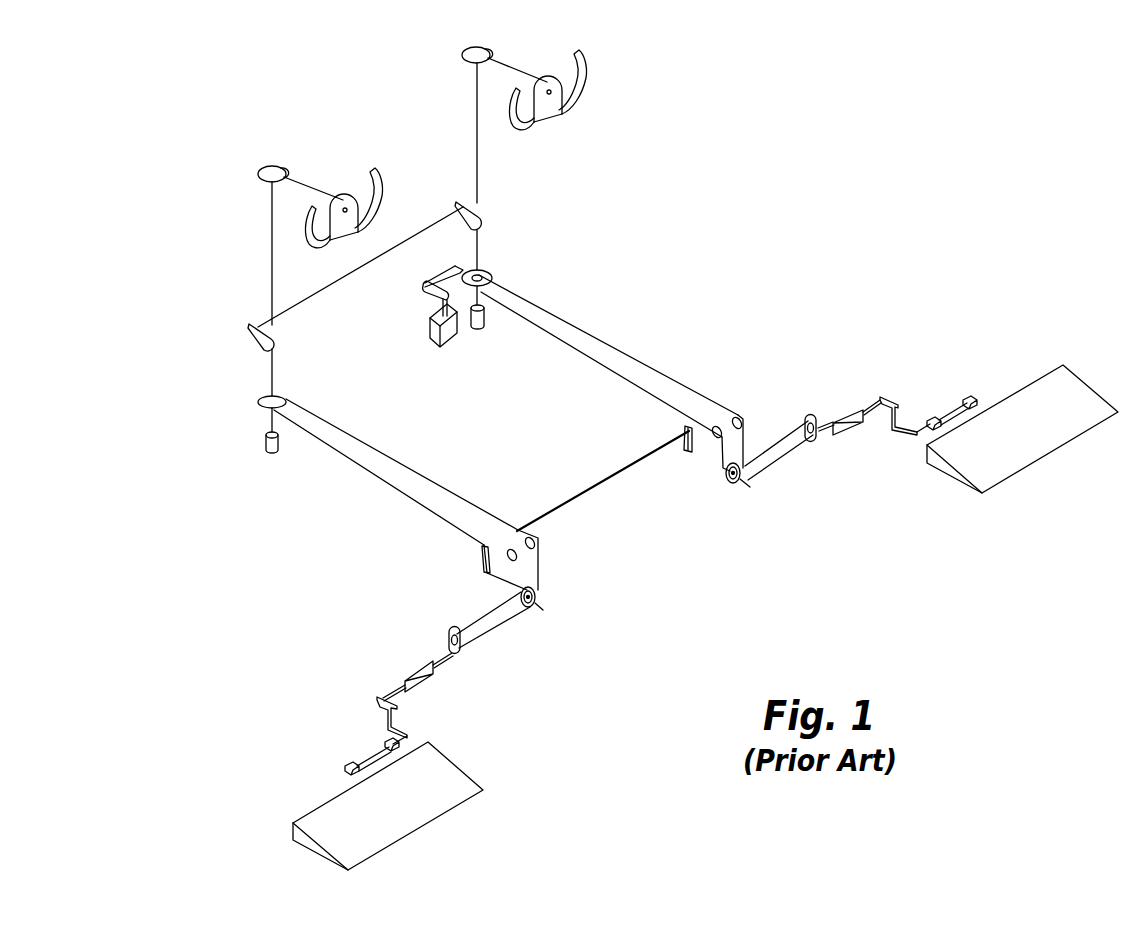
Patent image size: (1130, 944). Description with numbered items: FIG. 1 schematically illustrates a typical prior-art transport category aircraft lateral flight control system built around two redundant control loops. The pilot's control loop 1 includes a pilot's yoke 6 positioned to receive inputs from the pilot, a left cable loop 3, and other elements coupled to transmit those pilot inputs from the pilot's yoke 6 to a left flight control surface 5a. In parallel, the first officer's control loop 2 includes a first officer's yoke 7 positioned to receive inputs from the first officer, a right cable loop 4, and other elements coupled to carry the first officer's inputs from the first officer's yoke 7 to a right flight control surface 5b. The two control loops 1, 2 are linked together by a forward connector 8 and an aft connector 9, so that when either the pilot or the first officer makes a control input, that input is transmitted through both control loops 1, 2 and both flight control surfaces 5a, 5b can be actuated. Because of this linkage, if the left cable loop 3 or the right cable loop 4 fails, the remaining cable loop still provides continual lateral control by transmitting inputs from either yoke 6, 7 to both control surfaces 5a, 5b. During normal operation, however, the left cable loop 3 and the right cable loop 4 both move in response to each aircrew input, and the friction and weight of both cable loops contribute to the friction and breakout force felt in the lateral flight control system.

The pilot's control loop 1 is at (233, 279).
The first officer's control loop 2 is at (557, 152).
The left cable loop 3 is at (335, 472).
The right cable loop 4 is at (607, 330).
The left flight control surface 5a is at (470, 825).
The right flight control surface 5b is at (1038, 482).
The pilot's yoke 6 is at (352, 192).
The first officer's yoke 7 is at (556, 75).
The forward connector 8 is at (302, 293).
The aft connector 9 is at (527, 512).